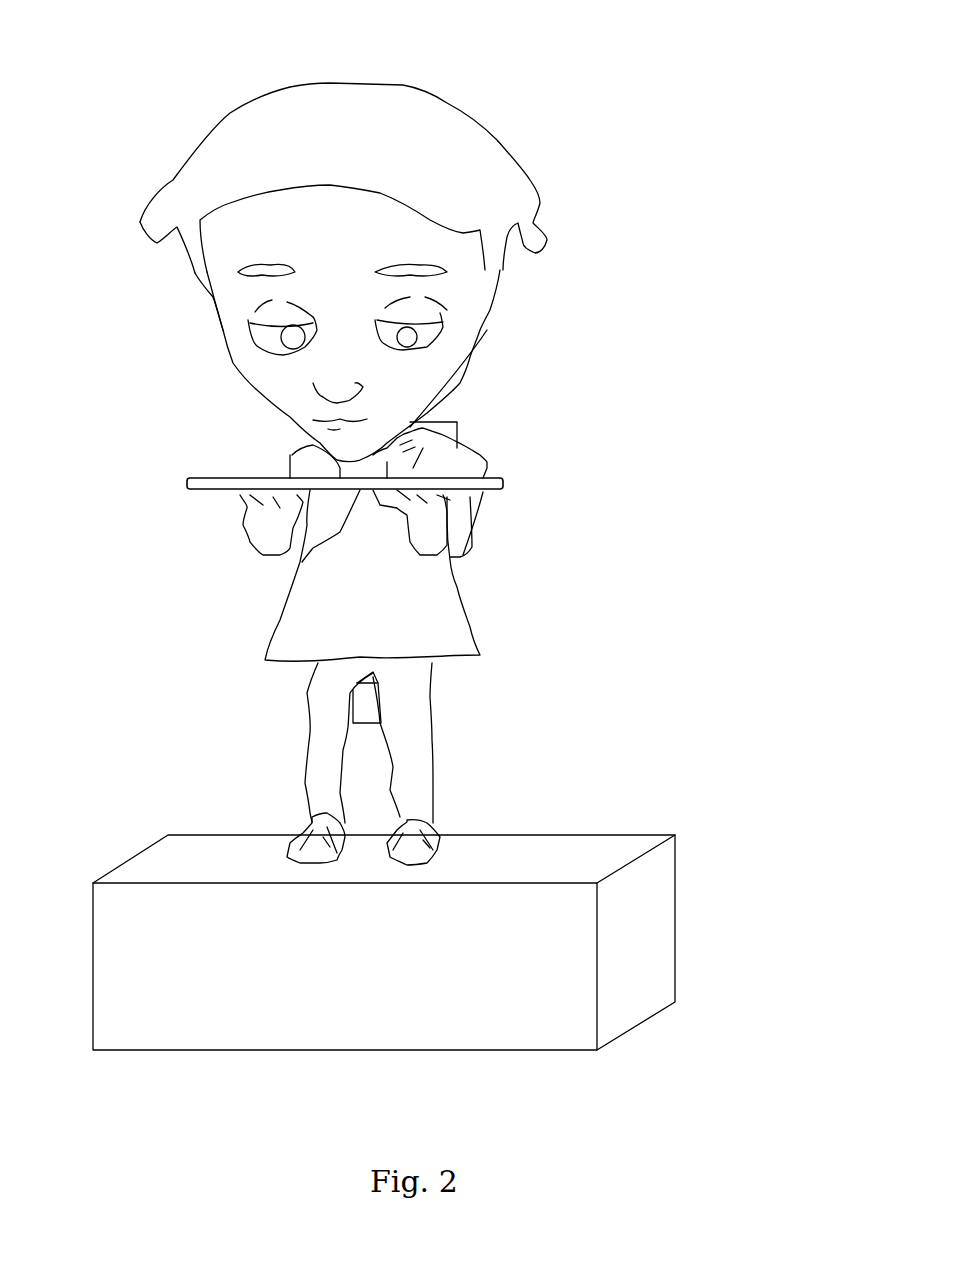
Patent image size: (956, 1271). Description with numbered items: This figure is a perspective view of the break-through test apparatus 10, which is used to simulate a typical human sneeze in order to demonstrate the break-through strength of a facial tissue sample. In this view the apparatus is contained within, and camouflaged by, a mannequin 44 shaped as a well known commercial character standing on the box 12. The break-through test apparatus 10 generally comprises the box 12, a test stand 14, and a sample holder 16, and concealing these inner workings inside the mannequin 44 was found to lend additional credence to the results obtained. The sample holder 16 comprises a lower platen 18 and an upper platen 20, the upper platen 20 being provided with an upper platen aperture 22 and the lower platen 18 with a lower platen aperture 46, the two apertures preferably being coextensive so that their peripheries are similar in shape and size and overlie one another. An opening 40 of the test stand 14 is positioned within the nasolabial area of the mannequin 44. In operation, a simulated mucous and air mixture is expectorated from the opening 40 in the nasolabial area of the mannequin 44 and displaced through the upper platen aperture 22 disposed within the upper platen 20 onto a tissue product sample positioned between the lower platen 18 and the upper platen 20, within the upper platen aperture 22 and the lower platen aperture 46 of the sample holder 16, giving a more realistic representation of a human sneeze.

The break-through test apparatus 10 is at (612, 231).
The box 12 is at (610, 940).
The test stand 14 is at (452, 717).
The sample holder 16 is at (197, 493).
The lower platen 18 is at (500, 492).
The upper platen 20 is at (493, 473).
The upper platen aperture 22 is at (290, 452).
The opening 40 is at (380, 405).
The mannequin 44 is at (473, 97).
The lower platen aperture 46 is at (340, 530).